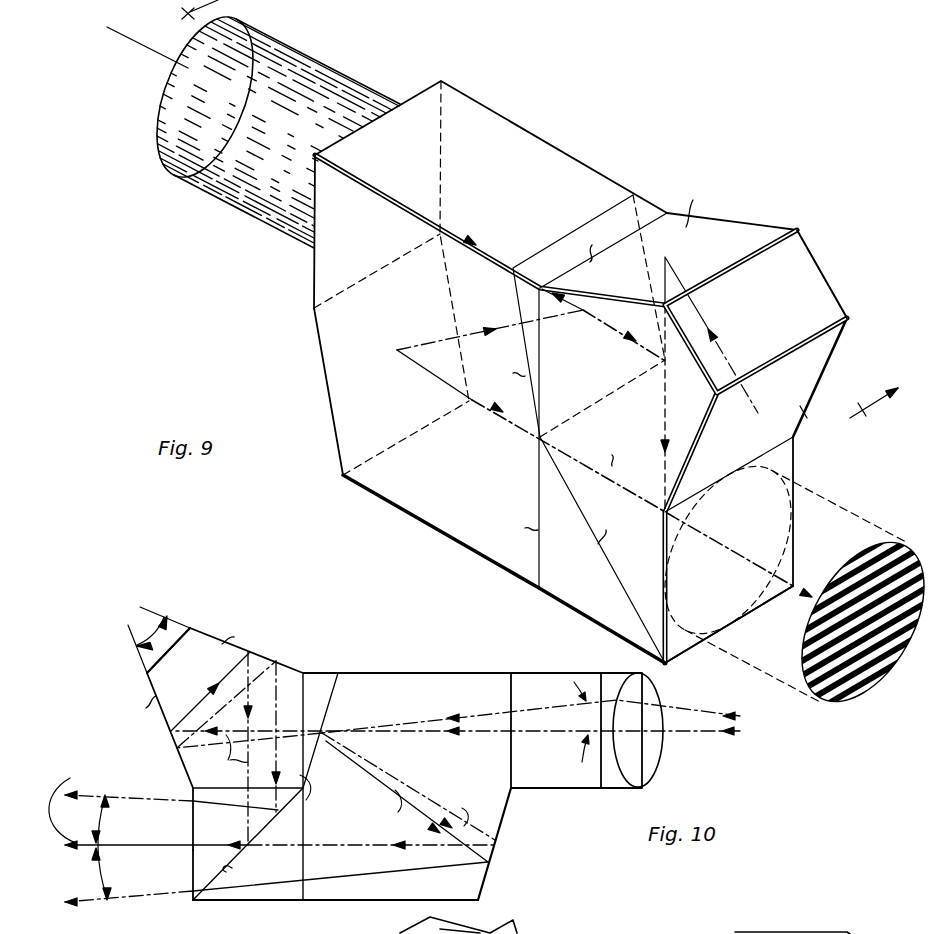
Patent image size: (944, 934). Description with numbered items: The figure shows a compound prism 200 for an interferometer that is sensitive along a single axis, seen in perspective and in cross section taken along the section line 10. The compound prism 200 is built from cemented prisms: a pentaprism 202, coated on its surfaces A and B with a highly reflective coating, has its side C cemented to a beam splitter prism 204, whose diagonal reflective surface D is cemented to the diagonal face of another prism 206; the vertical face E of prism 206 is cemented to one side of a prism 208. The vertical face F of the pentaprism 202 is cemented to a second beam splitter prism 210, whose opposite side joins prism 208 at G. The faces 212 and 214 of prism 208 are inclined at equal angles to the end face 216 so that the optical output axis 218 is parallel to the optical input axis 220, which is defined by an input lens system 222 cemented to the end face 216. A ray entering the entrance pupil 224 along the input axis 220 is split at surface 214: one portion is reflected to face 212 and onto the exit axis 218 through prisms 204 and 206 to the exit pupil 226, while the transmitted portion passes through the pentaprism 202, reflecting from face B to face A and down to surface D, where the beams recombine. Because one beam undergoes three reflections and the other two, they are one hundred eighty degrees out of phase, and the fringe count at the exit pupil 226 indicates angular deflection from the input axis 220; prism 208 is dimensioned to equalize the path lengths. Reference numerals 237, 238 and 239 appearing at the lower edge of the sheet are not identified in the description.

In FIG. 9, the section line 10 is at (517, 222).
In FIG. 9, the compound prism 200 is at (532, 132).
In FIG. 10, the compound prism 200 is at (394, 761).
In FIG. 9, the pentaprism 202 is at (760, 221).
In FIG. 10, the pentaprism 202 is at (178, 635).
In FIG. 9, the beam splitter prism 204 is at (796, 452).
In FIG. 10, the beam splitter prism 204 is at (192, 832).
In FIG. 9, the prism 206 is at (592, 616).
In FIG. 10, the prism 206 is at (208, 902).
In FIG. 9, the prism 208 is at (388, 502).
In FIG. 10, the prism 208 is at (370, 902).
In FIG. 9, the second beam splitter prism 210 is at (652, 203).
In FIG. 10, the second beam splitter prism 210 is at (305, 672).
In FIG. 9, the face of prism 208 212 is at (326, 392).
In FIG. 10, the face of prism 208 212 is at (496, 836).
In FIG. 9, the surface of beam splitter prism 210 214 is at (538, 248).
In FIG. 10, the surface of beam splitter prism 210 214 is at (328, 716).
In FIG. 9, the end face 216 is at (412, 99).
In FIG. 9, the optical output axis 218 is at (818, 592).
In FIG. 10, the optical output axis 218 is at (136, 850).
In FIG. 9, the optical input axis 220 is at (152, 61).
In FIG. 10, the optical input axis 220 is at (518, 733).
In FIG. 9, the input lens system 222 is at (334, 70).
In FIG. 10, the input lens system 222 is at (555, 662).
In FIG. 10, the entrance pupil 224 is at (659, 732).
In FIG. 9, the exit pupil 226 is at (740, 614).
In FIG. 10, the exit pupil 226 is at (192, 881).
In FIG. 10, the element of adjacent figure 237 is at (788, 932).
In FIG. 10, the element of adjacent figure 238 is at (668, 932).
In FIG. 10, the element of adjacent figure 239 is at (520, 932).